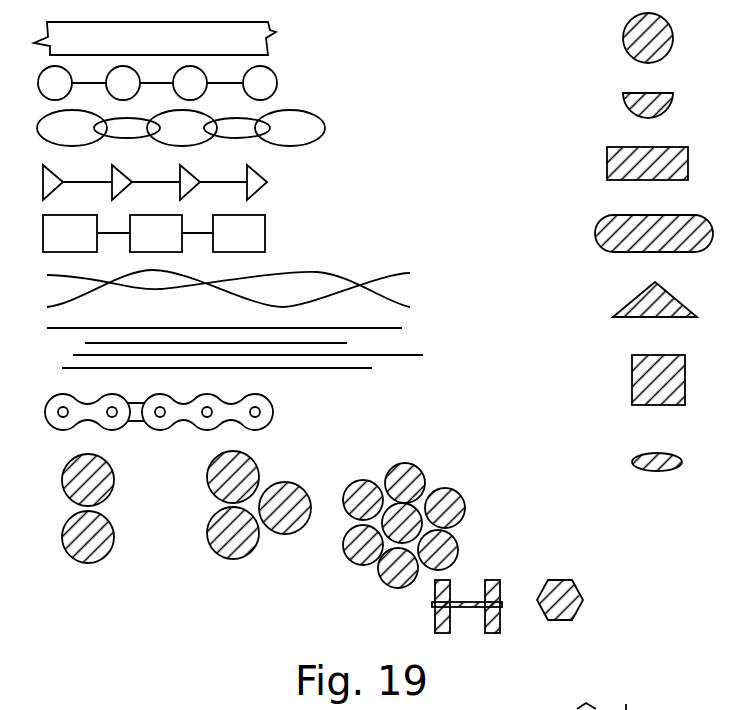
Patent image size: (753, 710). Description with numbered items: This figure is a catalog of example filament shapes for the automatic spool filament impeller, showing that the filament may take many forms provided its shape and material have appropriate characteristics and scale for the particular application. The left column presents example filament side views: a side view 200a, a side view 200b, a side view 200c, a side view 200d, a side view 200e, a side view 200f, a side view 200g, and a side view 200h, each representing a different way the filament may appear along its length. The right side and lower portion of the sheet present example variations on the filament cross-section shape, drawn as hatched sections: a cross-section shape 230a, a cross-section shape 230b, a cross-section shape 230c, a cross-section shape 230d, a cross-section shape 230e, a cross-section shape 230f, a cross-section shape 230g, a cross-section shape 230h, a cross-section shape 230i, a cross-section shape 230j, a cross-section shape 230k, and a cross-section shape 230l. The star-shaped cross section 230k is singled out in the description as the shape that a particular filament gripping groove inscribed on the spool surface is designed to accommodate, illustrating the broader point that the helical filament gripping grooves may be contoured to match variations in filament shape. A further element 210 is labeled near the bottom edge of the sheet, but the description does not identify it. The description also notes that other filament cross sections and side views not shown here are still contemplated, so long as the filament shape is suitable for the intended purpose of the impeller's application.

The filament side view 200a is at (271, 22).
The filament side view 200b is at (275, 68).
The filament side view 200c is at (325, 119).
The filament side view 200d is at (267, 171).
The filament side view 200e is at (265, 222).
The filament side view 200f is at (380, 283).
The filament side view 200g is at (403, 347).
The filament side view 200h is at (270, 395).
The filament cross-section shape 230a is at (625, 20).
The filament cross-section shape 230b is at (625, 108).
The filament cross-section shape 230c is at (607, 160).
The filament cross-section shape 230d is at (596, 236).
The filament cross-section shape 230e is at (640, 295).
The filament cross-section shape 230f is at (632, 380).
The filament cross-section shape 230g is at (117, 537).
The filament cross-section shape 230h is at (228, 558).
The filament cross-section shape 230i is at (458, 565).
The filament cross-section shape 230j is at (432, 588).
The star-shaped cross section 230k is at (578, 598).
The filament cross-section shape 230l is at (632, 463).
The attachment member 210 is at (610, 708).